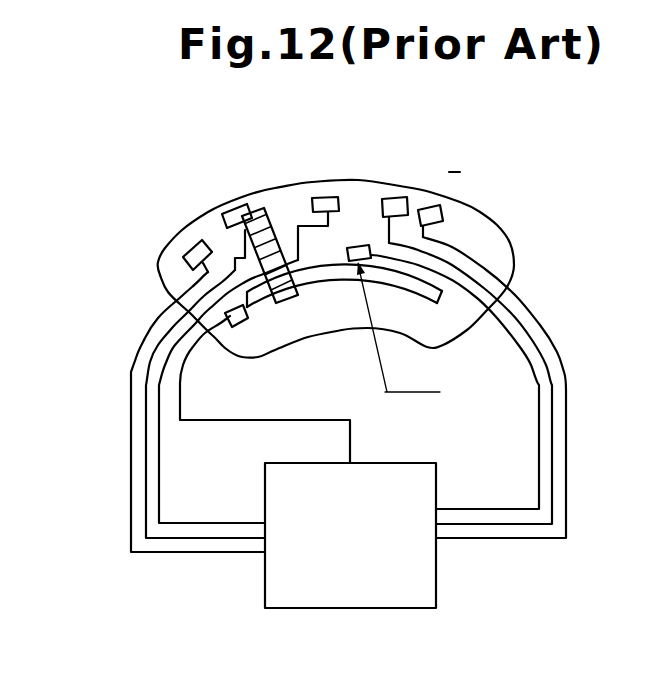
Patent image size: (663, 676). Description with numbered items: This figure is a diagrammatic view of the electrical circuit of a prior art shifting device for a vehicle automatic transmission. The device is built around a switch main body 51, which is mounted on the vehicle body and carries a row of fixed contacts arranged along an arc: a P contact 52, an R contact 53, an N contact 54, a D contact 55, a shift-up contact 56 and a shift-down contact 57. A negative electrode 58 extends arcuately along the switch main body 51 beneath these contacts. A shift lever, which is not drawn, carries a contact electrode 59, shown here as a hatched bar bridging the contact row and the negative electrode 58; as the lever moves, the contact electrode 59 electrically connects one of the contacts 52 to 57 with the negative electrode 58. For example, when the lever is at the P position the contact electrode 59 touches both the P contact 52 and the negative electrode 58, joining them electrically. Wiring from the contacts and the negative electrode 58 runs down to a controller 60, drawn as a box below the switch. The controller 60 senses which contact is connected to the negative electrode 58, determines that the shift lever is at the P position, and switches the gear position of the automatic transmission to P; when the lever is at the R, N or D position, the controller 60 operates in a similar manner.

The switch main body 51 is at (514, 252).
The P contact 52 is at (159, 264).
The R contact 53 is at (236, 222).
The N contact 54 is at (334, 196).
The D contact 55 is at (389, 196).
The shift-up contact 56 is at (343, 263).
The shift-down contact 57 is at (443, 219).
The negative electrode 58 is at (244, 325).
The contact electrode 59 is at (300, 231).
The controller 60 is at (436, 578).